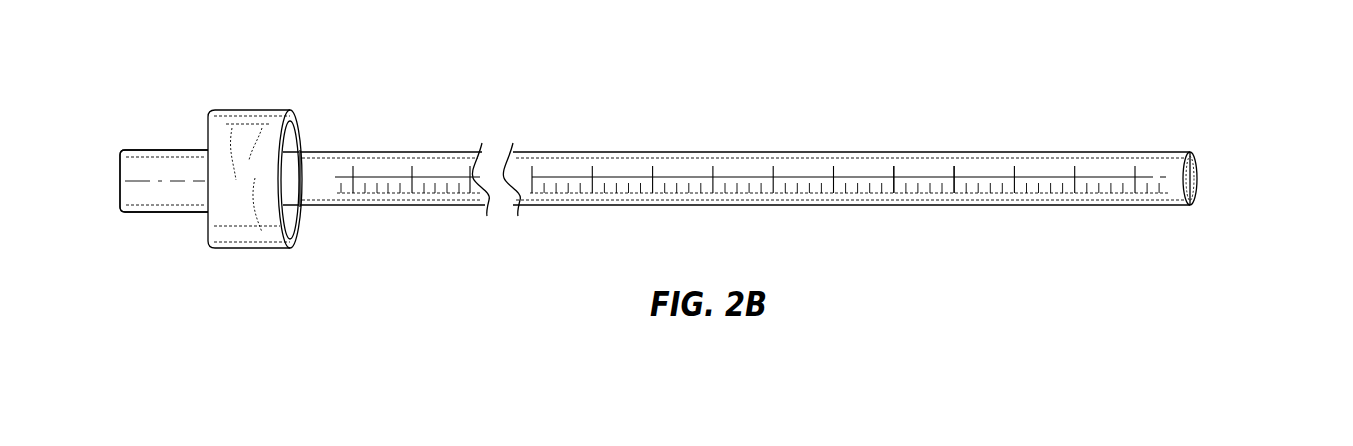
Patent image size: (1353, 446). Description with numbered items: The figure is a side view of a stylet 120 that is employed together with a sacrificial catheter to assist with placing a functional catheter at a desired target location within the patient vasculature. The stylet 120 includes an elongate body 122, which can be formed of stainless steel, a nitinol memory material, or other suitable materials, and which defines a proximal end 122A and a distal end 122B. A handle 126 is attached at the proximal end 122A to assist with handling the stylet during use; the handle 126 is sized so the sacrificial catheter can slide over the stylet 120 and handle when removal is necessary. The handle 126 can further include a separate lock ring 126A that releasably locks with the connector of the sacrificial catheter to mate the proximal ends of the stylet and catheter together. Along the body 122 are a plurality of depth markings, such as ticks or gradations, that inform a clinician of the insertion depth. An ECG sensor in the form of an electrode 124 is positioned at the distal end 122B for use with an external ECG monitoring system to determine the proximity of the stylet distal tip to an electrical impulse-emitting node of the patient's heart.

The stylet 120 is at (642, 103).
The elongate body 122 is at (737, 160).
The proximal end 122A is at (308, 163).
The distal end 122B is at (1184, 152).
The electrode 124 is at (1197, 185).
The handle 126 is at (147, 155).
The lock ring 126A is at (247, 110).